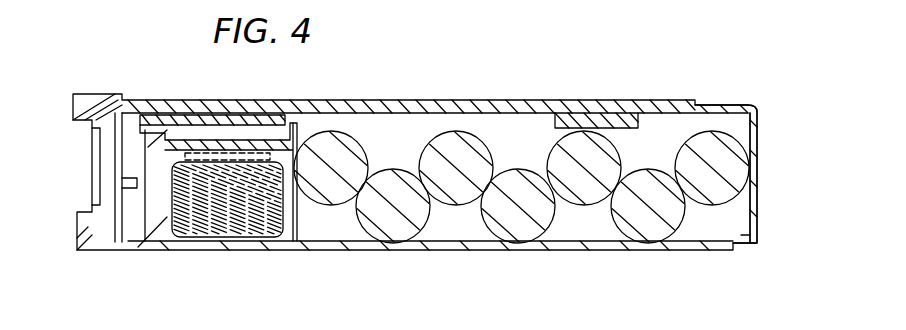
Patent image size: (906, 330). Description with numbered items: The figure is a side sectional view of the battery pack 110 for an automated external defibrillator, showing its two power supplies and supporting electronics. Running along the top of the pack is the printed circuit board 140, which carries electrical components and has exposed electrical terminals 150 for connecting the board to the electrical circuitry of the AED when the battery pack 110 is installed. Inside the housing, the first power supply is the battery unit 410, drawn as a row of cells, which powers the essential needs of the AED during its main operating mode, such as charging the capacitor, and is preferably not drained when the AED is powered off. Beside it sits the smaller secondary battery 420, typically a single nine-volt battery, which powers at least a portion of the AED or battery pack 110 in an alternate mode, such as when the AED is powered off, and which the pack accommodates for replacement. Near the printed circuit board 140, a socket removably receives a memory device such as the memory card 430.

The battery pack 110 is at (442, 86).
The printed circuit board 140 is at (535, 104).
The exposed electrical terminals 150 is at (712, 105).
The battery unit 410 is at (402, 228).
The secondary battery 420 is at (235, 217).
The memory card 430 is at (245, 120).